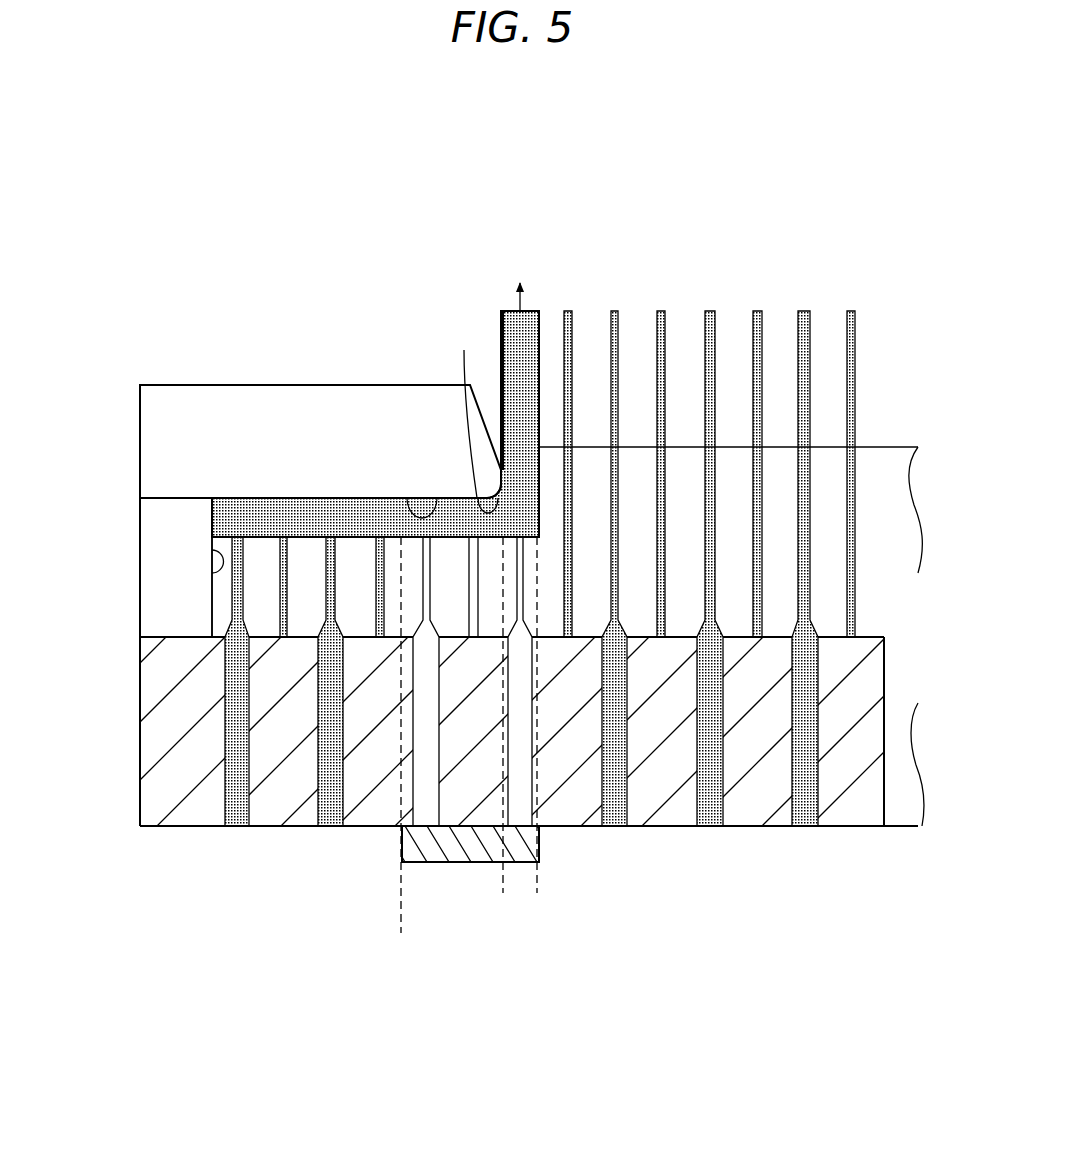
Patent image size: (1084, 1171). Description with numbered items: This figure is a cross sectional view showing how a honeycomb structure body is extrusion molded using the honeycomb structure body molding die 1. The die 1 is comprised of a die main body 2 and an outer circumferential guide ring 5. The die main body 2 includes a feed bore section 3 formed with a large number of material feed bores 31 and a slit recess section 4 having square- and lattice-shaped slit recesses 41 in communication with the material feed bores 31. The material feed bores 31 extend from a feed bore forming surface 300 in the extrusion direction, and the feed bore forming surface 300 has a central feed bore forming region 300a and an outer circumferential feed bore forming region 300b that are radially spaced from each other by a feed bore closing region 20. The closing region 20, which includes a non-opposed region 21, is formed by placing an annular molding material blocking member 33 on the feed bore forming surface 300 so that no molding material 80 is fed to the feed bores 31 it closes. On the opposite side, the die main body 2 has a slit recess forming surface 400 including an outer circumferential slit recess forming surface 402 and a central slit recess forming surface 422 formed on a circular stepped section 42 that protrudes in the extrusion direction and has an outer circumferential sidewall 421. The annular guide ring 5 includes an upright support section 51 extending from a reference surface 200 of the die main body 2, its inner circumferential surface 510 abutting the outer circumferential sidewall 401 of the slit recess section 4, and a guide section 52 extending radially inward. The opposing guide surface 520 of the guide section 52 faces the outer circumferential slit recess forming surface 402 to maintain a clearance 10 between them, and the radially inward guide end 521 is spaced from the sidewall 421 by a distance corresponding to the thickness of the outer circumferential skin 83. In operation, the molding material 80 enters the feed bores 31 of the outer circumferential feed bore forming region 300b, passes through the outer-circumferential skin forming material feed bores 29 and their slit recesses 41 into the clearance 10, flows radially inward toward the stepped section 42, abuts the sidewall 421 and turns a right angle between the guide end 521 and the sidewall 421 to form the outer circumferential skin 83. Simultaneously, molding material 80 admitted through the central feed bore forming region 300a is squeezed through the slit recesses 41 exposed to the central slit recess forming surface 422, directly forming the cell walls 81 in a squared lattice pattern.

The honeycomb structure body molding die 1 is at (126, 390).
The die main body 2 is at (136, 684).
The feed bore section 3 is at (192, 772).
The slit recess section 4 is at (862, 494).
The outer circumferential guide ring 5 is at (219, 438).
The clearance 10 is at (368, 513).
The feed bore closing region 20 is at (401, 940).
The non-opposed region 21 is at (503, 890).
The outer-circumferential skin forming material feed bores 29 is at (330, 790).
The material feed bores 31 is at (790, 795).
The molding material blocking member 33 is at (457, 845).
The slit recesses 41 is at (762, 413).
The circular stepped section 42 is at (678, 457).
The upright support section 51 is at (180, 522).
The guide section 52 is at (243, 420).
The molding material 80 is at (282, 512).
The cell walls 81 is at (569, 350).
The outer circumferential skin 83 is at (509, 314).
The reference surface 200 is at (195, 635).
The feed bore forming surface 300 is at (735, 832).
The central feed bore forming region 300a is at (678, 830).
The outer circumferential feed bore forming region 300b is at (267, 830).
The slit recess forming surface 400 is at (732, 447).
The outer circumferential sidewall of slit recess section 401 is at (212, 602).
The outer circumferential slit recess forming surface 402 is at (307, 537).
The outer circumferential sidewall of stepped section 421 is at (510, 510).
The central slit recess forming surface 422 is at (637, 447).
The inner circumferential surface 510 is at (222, 562).
The opposing guide surface 520 is at (428, 500).
The radially inward guide end 521 is at (504, 472).